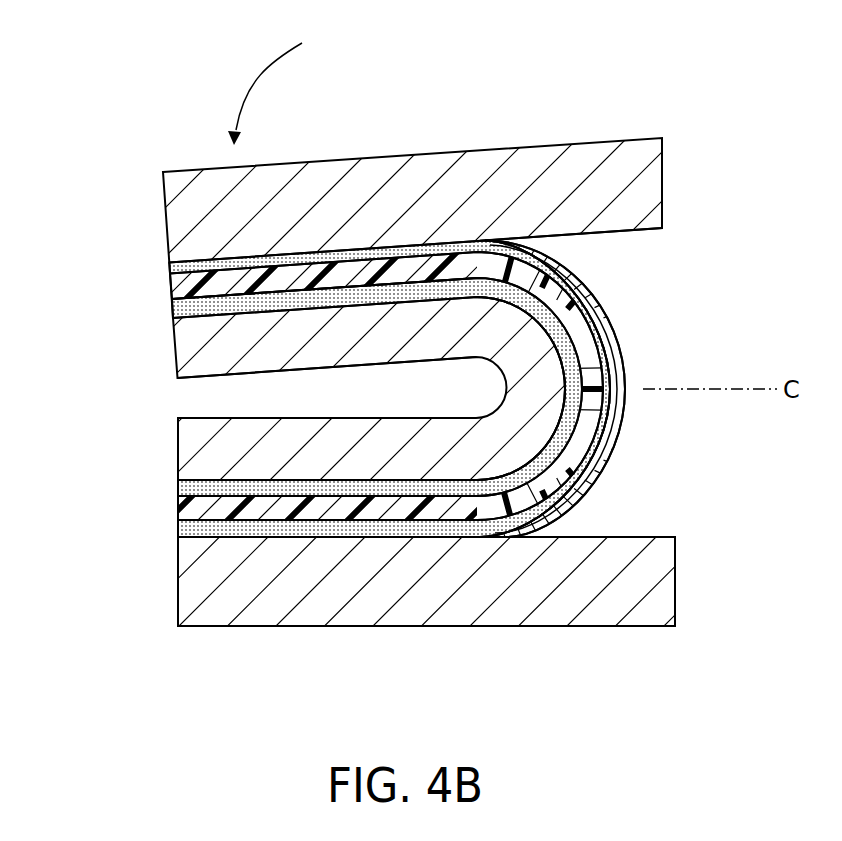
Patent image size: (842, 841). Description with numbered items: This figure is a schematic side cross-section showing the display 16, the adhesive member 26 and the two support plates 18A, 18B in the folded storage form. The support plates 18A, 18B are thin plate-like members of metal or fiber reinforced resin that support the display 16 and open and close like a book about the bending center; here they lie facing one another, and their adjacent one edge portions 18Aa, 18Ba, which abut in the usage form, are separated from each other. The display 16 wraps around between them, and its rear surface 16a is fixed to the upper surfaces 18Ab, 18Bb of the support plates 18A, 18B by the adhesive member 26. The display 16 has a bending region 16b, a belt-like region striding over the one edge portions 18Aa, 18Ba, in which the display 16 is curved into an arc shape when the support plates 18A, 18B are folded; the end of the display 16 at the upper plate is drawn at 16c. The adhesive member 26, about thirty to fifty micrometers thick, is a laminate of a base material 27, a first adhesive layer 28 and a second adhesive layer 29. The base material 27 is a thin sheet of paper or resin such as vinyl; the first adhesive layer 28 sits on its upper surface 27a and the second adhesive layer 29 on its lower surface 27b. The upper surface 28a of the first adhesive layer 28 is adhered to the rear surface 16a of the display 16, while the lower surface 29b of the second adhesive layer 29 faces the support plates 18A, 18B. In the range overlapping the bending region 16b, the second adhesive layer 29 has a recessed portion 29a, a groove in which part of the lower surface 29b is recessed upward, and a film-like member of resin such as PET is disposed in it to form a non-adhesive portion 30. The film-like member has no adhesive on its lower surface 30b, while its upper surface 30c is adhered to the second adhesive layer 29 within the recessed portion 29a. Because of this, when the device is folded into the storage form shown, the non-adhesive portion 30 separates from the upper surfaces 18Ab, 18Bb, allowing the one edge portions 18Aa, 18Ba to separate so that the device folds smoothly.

The display 16 is at (166, 440).
The rear surface of the display 16a is at (357, 482).
The bending region of the display 16b is at (660, 352).
The upper arm end of substrate 16c is at (181, 378).
The support plate 18A is at (458, 642).
The one edge portion of the support plate 18Aa is at (675, 578).
The upper surface of the support plate 18Ab is at (610, 535).
The support plate 18B is at (442, 142).
The one edge portion of the support plate 18Ba is at (662, 176).
The upper surface of the support plate 18Bb is at (595, 235).
The adhesive member 26 is at (78, 230).
The base material 27 is at (193, 288).
The upper surface of the base material 27a is at (282, 300).
The lower surface of the base material 27b is at (246, 522).
The first adhesive layer 28 is at (173, 308).
The upper surface of the first adhesive layer 28a is at (214, 480).
The second adhesive layer 29 is at (173, 268).
The recessed portion 29a is at (627, 410).
The lower surface of the second adhesive layer 29b is at (297, 537).
The non-adhesive portion 30 is at (610, 450).
The lower surface of the film-like member 30b is at (595, 302).
The upper surface of the film-like member 30c is at (500, 528).